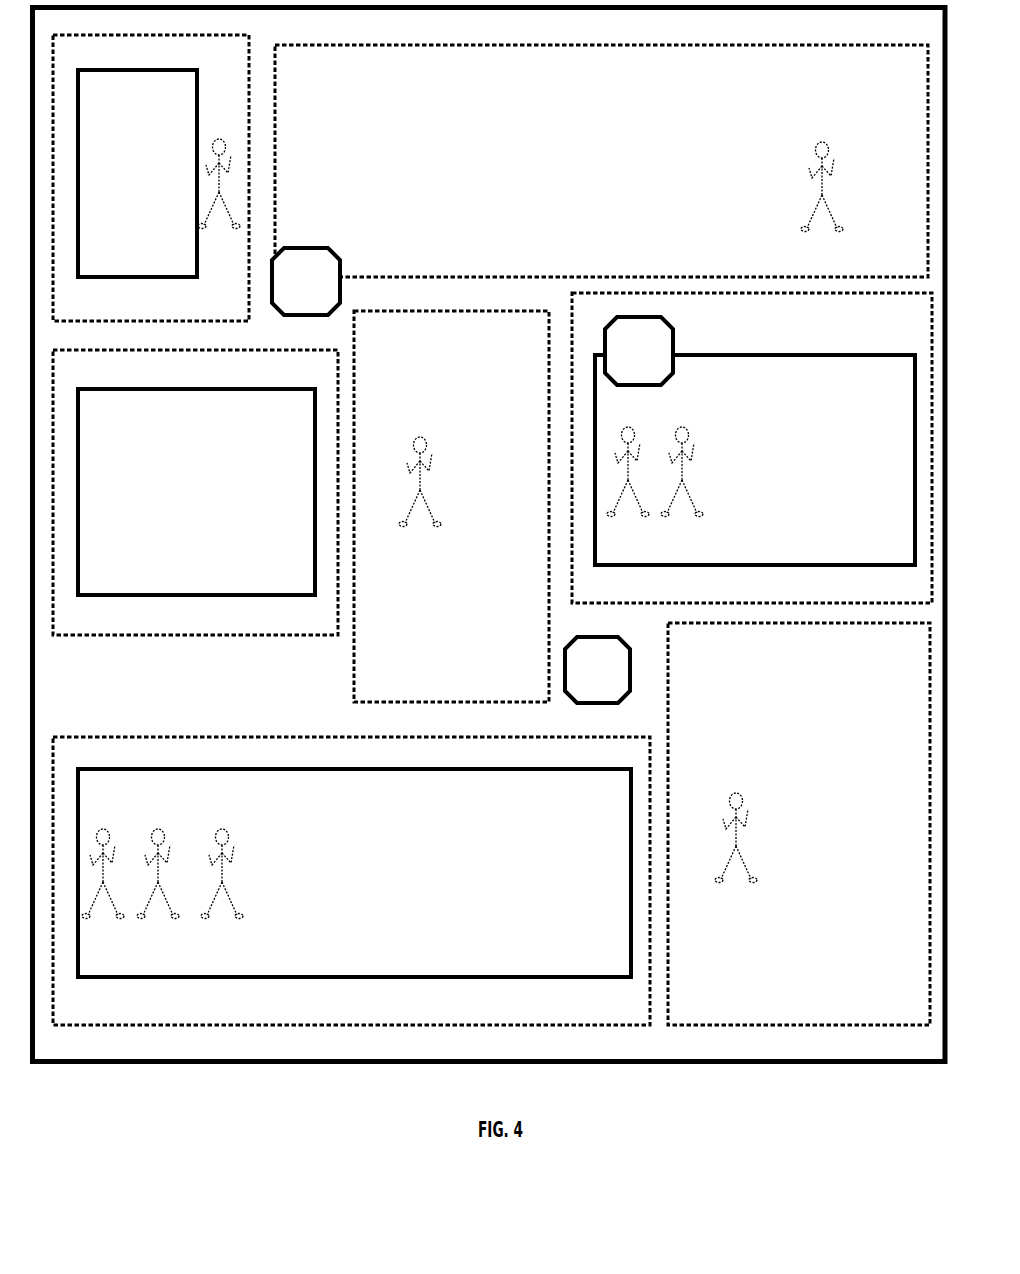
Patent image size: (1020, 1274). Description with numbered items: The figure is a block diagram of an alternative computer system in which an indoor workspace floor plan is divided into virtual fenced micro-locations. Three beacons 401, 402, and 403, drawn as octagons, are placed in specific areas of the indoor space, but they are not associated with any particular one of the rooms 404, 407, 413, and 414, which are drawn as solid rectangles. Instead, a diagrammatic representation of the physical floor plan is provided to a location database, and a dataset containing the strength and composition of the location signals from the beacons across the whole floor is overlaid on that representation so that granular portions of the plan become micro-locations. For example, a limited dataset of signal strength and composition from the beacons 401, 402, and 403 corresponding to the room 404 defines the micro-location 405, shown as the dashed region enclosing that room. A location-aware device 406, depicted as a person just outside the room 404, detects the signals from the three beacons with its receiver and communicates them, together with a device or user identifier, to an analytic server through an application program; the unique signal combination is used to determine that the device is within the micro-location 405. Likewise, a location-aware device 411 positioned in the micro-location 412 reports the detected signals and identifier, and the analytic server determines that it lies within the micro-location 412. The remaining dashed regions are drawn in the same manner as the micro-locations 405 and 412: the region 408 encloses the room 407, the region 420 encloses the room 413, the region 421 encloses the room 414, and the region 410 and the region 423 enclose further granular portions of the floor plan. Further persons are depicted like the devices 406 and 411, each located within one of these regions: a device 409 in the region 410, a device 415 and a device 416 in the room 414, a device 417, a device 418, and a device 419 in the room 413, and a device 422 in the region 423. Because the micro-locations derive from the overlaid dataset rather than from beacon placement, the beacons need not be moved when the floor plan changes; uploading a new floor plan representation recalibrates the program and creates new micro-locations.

The beacon 401 is at (306, 281).
The beacon 402 is at (597, 670).
The beacon 403 is at (639, 351).
The room 404 is at (137, 173).
The micro-location 405 is at (151, 178).
The location-aware device 406 is at (219, 172).
The room 407 is at (196, 492).
The second zone 408 is at (195, 492).
The user 409 is at (420, 465).
The third zone 410 is at (451, 506).
The location-aware device 411 is at (736, 820).
The micro-location 412 is at (799, 824).
The room 413 is at (354, 873).
The room 414 is at (755, 460).
The user 415 is at (628, 457).
The user 416 is at (682, 457).
The user 417 is at (103, 859).
The user 418 is at (158, 859).
The user 419 is at (222, 859).
The fifth zone 420 is at (351, 881).
The sixth zone 421 is at (752, 448).
The user 422 is at (822, 171).
The seventh zone 423 is at (601, 161).